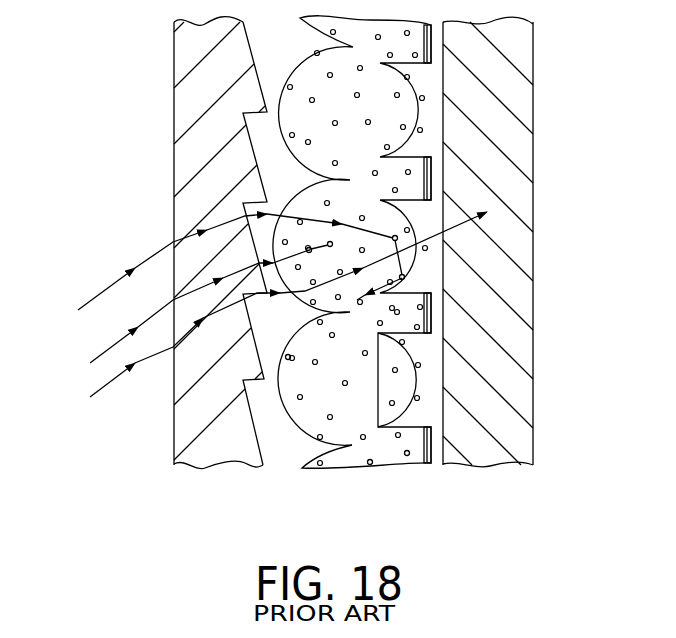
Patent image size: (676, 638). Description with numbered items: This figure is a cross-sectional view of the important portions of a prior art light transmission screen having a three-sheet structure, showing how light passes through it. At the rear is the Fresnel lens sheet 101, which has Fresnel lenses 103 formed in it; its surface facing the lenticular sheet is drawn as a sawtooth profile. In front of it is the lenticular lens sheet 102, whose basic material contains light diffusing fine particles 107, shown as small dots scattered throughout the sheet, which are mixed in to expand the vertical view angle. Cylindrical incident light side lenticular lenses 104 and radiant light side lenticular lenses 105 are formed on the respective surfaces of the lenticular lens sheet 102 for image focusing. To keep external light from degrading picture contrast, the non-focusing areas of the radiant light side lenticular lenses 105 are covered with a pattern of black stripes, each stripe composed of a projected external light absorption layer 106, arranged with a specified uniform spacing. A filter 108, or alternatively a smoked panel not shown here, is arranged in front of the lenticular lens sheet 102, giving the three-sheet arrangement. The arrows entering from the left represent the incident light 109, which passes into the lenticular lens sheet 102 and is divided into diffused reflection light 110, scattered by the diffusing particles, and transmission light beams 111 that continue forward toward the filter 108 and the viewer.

The Fresnel lens sheet 101 is at (237, 266).
The lenticular lens sheet 102 is at (423, 279).
The Fresnel lenses 103 is at (257, 418).
The incident light side lenticular lenses 104 is at (287, 356).
The radiant light side lenticular lenses 105 is at (413, 407).
The external light absorption layer 106 is at (427, 463).
The light diffusing fine particles 107 is at (407, 455).
The filter 108 is at (483, 468).
The incident light 109 is at (221, 305).
The diffused reflection light 110 is at (328, 243).
The transmission light beams 111 is at (488, 212).